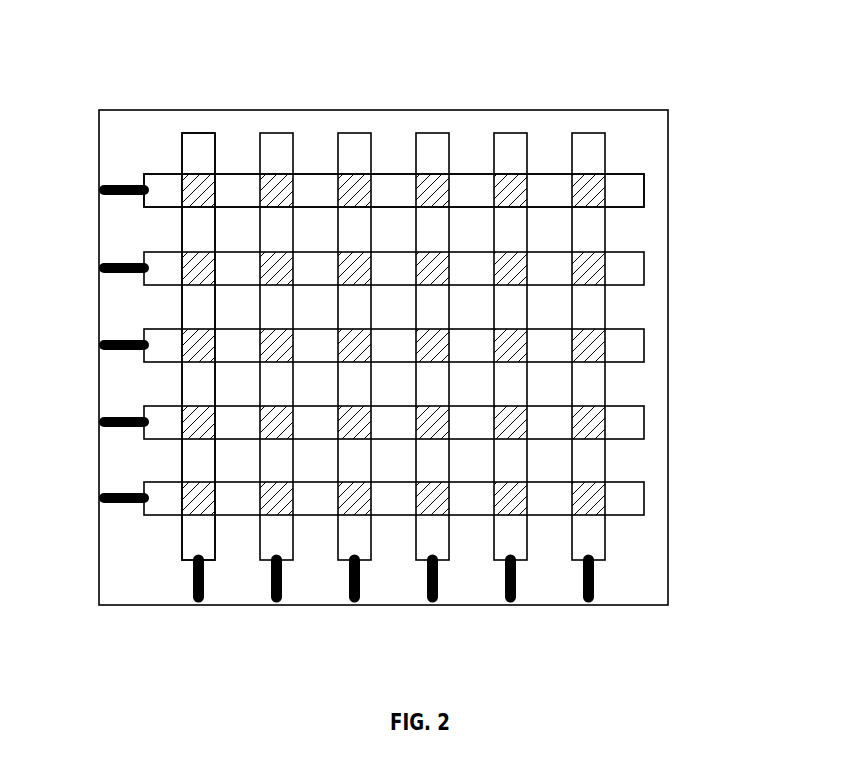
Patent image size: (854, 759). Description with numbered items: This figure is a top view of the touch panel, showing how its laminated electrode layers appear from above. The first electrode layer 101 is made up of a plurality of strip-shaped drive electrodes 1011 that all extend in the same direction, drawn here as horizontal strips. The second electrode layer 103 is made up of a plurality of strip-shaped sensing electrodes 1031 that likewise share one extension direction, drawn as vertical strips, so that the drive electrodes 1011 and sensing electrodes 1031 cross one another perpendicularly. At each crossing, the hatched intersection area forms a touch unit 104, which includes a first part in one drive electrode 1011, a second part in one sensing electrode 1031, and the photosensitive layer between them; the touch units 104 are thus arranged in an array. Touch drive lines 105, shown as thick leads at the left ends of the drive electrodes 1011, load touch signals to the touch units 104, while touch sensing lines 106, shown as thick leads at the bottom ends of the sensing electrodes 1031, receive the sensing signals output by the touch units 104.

The first electrode layer 101 is at (750, 194).
The strip-shaped drive electrode 1011 is at (630, 190).
The second electrode layer 103 is at (201, 63).
The strip-shaped sensing electrode 1031 is at (201, 133).
The touch unit 104 is at (593, 272).
The touch drive line 105 is at (99, 190).
The touch sensing line 106 is at (201, 605).